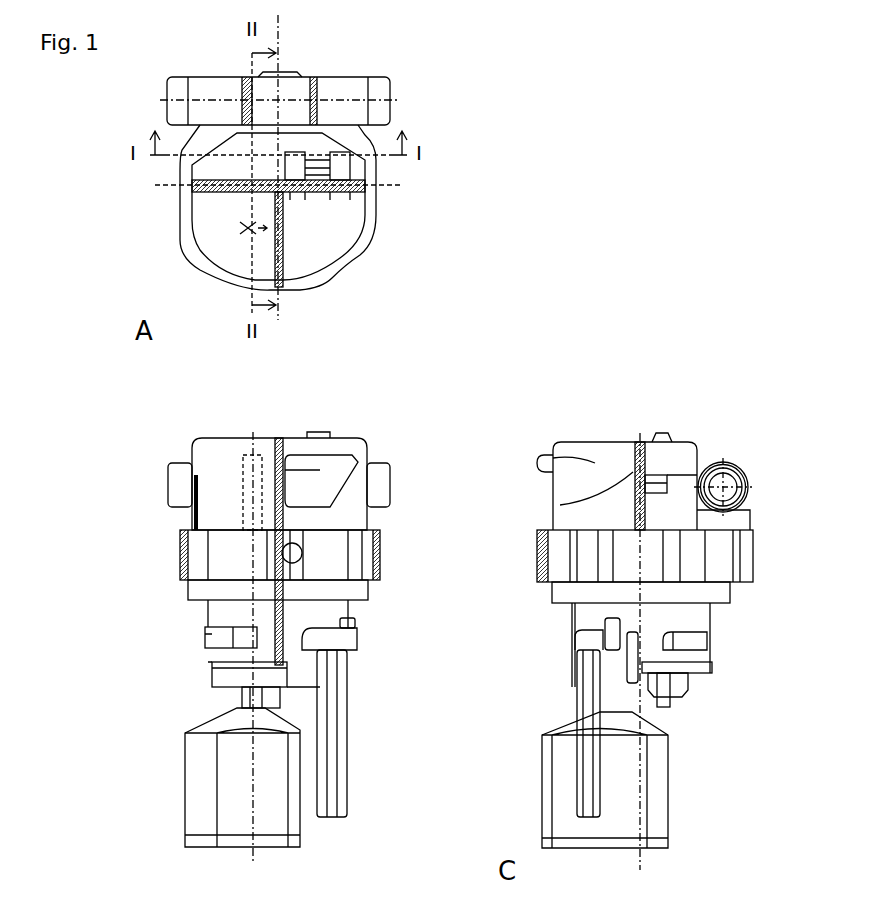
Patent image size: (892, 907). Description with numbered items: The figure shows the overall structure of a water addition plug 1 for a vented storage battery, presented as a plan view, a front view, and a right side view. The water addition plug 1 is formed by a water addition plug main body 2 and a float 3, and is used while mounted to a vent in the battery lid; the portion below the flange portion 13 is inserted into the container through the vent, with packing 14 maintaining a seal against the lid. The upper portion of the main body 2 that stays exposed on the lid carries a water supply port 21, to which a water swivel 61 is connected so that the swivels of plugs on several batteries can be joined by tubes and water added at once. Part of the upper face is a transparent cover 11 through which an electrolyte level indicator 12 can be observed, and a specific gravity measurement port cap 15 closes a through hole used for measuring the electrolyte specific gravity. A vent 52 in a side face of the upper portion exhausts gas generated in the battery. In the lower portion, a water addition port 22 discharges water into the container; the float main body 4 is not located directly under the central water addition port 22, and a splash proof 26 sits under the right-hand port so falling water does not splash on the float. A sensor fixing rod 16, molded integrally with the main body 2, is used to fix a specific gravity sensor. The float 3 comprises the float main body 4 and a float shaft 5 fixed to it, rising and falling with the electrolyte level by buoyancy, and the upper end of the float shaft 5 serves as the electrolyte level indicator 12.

The water addition plug 1 is at (165, 408).
The water addition plug main body 2 is at (150, 448).
The float 3 is at (267, 732).
The float main body 4 is at (190, 818).
The float shaft 5 is at (240, 697).
The transparent cover 11 is at (215, 210).
The electrolyte level indicator 12 is at (245, 230).
The flange portion 13 is at (382, 553).
The packing 14 is at (368, 590).
The specific gravity measurement port cap 15 is at (317, 225).
The sensor fixing rod 16 is at (340, 762).
The water supply port 21 is at (740, 505).
The water addition port 22 is at (685, 688).
The splash proof 26 is at (672, 705).
The vent 52 is at (655, 478).
The water swivel 61 is at (342, 88).